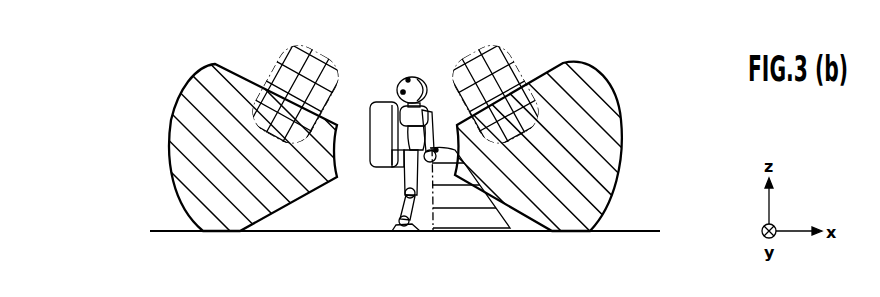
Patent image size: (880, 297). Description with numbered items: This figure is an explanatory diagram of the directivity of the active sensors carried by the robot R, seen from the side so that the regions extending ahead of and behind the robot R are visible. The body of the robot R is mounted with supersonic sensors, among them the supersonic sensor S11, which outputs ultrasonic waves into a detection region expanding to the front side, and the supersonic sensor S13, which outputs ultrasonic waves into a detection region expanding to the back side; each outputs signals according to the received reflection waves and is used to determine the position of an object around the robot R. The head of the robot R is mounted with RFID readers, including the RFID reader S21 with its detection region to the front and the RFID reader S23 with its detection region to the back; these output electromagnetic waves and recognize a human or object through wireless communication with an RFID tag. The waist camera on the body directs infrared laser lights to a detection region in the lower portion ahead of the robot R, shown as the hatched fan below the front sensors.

The robot R is at (431, 58).
The supersonic sensor S11 is at (440, 147).
The supersonic sensor S13 is at (370, 148).
The RFID reader S21 is at (408, 79).
The RFID reader S23 is at (403, 92).